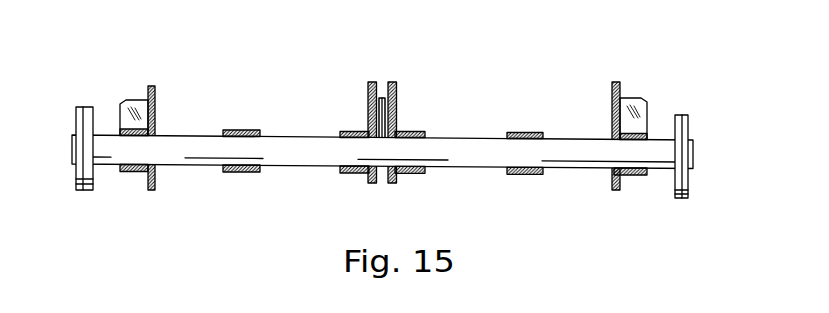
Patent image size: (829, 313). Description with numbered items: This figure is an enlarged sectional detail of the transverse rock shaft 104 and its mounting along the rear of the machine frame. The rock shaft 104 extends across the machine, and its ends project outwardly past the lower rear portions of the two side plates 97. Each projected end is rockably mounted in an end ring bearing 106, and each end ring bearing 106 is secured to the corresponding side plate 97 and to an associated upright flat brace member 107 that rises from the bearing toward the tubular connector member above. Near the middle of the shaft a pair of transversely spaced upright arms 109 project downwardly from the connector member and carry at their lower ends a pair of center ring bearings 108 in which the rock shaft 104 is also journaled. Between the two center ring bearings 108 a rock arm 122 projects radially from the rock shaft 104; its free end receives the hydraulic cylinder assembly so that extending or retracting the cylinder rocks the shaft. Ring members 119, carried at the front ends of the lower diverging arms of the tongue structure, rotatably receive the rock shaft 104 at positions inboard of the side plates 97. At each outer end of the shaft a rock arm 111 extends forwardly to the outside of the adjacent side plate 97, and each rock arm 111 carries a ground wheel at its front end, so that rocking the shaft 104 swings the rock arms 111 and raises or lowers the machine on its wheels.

The side plate 97 is at (155, 97).
The transverse rock shaft 104 is at (477, 155).
The end ring bearing 106 is at (131, 172).
The upright flat brace member 107 is at (126, 99).
The center ring bearing 108 is at (417, 135).
The upright arm 109 is at (369, 84).
The rock arm 111 is at (82, 107).
The ring member 119 is at (254, 172).
The rock arm 122 is at (381, 98).